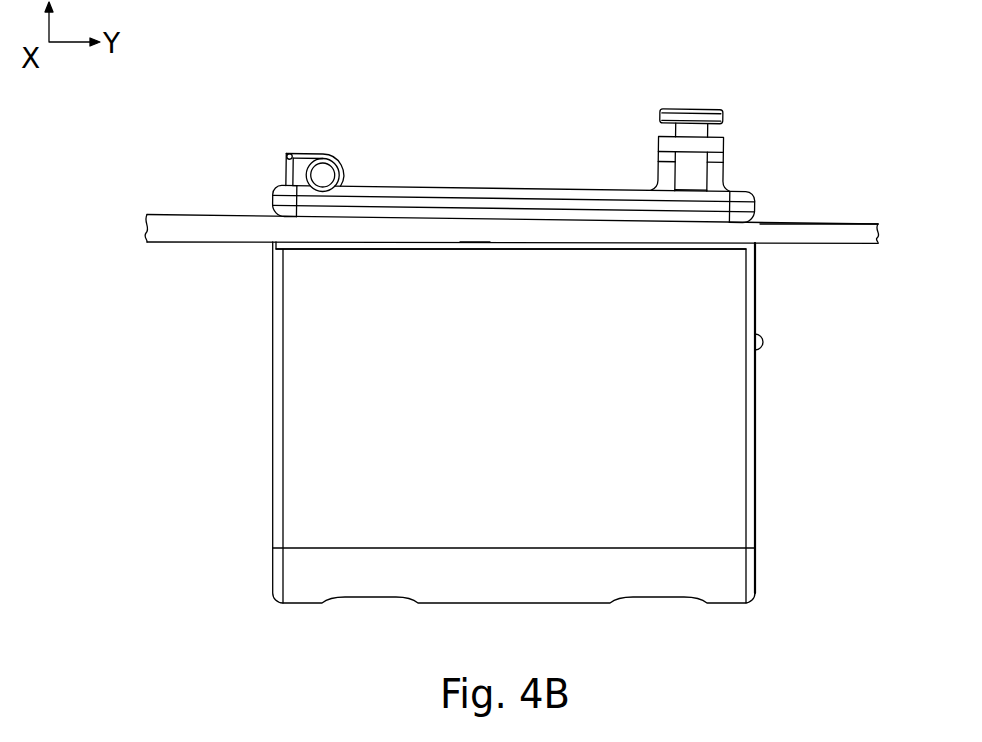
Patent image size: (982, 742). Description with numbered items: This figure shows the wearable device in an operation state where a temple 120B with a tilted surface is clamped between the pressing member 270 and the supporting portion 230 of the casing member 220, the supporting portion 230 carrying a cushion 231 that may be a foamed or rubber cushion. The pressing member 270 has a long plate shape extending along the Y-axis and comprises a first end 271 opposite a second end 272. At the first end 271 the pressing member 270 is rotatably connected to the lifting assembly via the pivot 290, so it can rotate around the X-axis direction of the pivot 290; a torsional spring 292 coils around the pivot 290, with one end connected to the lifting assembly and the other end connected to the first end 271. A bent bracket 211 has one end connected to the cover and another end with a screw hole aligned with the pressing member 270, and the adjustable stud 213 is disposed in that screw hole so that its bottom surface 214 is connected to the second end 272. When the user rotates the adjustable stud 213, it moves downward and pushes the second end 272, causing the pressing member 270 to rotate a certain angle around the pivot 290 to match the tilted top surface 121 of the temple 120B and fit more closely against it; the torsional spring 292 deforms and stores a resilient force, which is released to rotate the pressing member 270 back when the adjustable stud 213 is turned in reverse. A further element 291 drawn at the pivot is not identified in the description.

The temple 120B is at (181, 212).
The top surface of the temple 121 is at (877, 228).
The bracket 211 is at (716, 142).
The adjustable stud 213 is at (693, 113).
The bottom surface of the adjustable stud 214 is at (690, 190).
The casing member 220 is at (720, 457).
The supporting portion 230 is at (547, 245).
The cushion 231 is at (473, 247).
The pressing member 270 is at (607, 190).
The first end 271 is at (277, 187).
The second end 272 is at (746, 193).
The pivot 290 is at (337, 169).
The pivot pin 291 is at (323, 176).
The torsional spring 292 is at (303, 153).